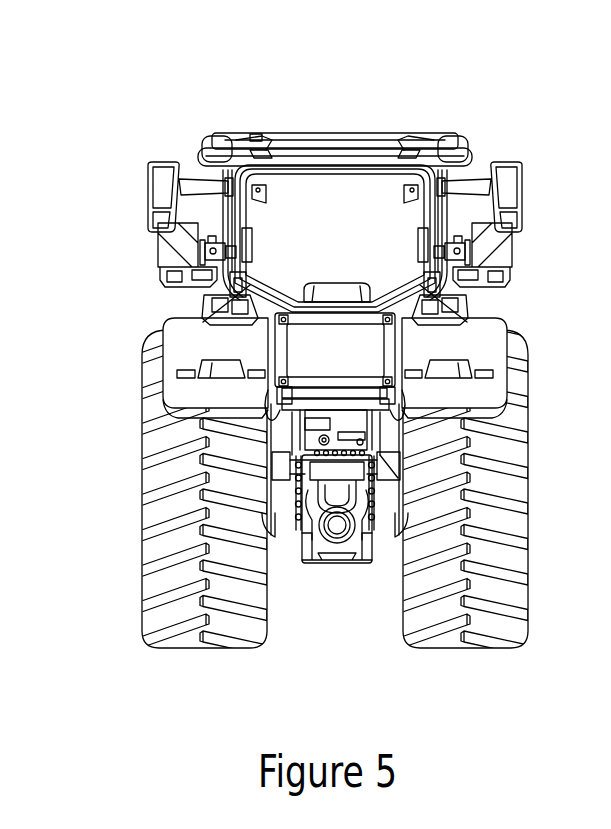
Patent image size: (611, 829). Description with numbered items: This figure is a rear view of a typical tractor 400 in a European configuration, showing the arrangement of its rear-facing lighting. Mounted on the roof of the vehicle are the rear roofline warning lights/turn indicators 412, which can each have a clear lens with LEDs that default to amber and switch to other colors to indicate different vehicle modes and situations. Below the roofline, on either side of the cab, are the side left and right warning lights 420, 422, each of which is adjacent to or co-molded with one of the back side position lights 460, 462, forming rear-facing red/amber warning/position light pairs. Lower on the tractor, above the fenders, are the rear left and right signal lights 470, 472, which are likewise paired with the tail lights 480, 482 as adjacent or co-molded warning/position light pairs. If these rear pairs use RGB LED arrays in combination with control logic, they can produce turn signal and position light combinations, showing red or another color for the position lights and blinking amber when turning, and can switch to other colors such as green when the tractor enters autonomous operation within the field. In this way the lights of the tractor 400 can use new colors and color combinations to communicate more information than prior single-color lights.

The tractor 400 is at (314, 101).
The rear roofline warning lights/turn indicators 412 is at (230, 151).
The side left warning light 420 is at (160, 281).
The side right warning light 422 is at (512, 281).
The back side position light 460 is at (222, 266).
The back side position light 462 is at (446, 260).
The rear left signal light 470 is at (236, 304).
The rear right signal light 472 is at (428, 294).
The tail light 480 is at (205, 320).
The tail light 482 is at (465, 320).